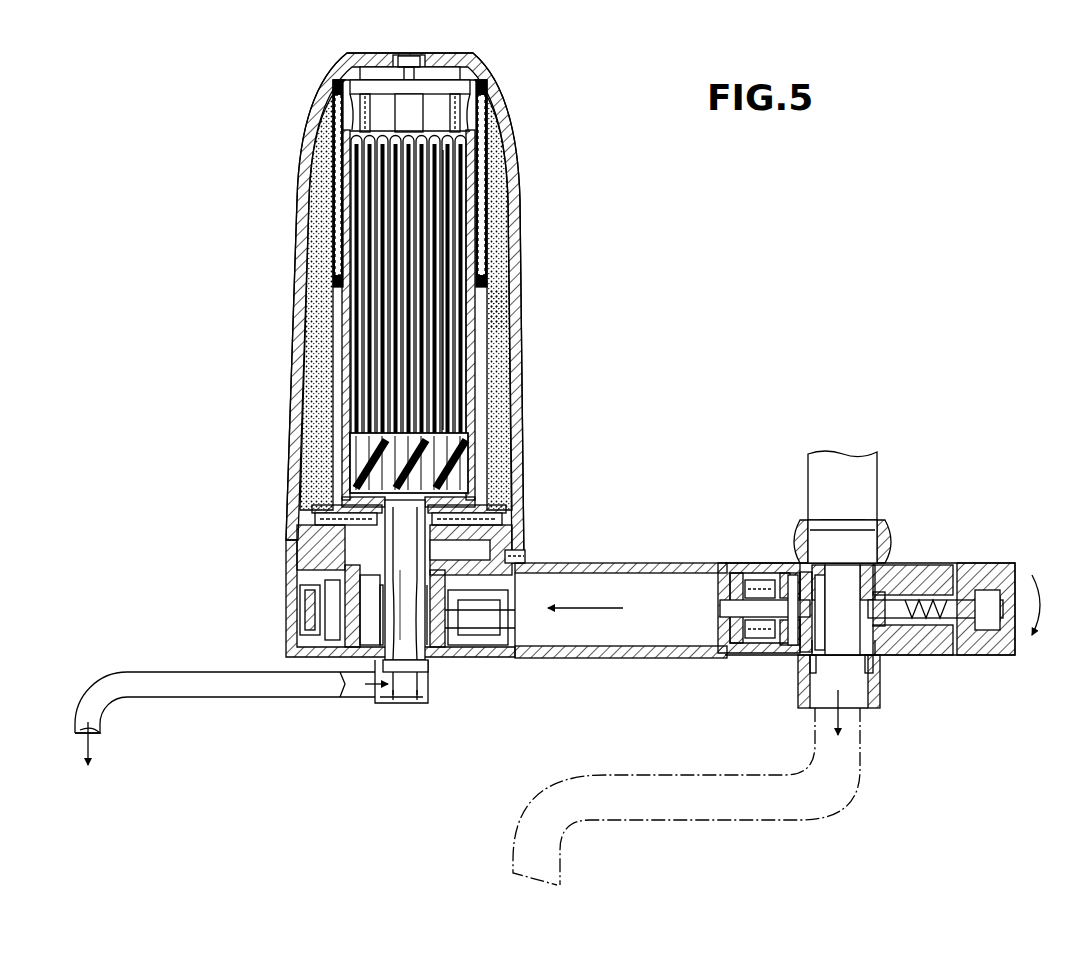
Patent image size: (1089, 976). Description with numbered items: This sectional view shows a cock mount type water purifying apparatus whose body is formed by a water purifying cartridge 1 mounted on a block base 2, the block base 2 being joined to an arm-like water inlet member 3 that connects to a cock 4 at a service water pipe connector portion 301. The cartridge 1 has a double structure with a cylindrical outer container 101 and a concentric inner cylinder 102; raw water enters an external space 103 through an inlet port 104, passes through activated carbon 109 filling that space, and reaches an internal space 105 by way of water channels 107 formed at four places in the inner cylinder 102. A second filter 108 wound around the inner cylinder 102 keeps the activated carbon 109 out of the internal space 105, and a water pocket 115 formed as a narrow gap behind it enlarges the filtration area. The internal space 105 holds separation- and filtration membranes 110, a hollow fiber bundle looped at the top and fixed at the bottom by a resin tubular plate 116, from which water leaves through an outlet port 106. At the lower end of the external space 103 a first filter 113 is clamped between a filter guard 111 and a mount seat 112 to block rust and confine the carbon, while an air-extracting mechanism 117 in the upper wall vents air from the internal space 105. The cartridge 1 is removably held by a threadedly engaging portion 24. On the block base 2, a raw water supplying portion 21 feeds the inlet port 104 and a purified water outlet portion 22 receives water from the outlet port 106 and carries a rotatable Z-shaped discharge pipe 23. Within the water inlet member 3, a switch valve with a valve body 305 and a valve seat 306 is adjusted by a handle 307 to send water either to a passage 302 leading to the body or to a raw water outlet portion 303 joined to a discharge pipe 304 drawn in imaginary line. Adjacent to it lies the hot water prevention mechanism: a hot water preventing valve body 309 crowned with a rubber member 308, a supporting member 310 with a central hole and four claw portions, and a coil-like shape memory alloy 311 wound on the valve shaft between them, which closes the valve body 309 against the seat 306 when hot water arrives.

The water purifying cartridge 1 is at (318, 78).
The block base 2 is at (277, 590).
The water inlet member 3 is at (668, 560).
The cock 4 is at (860, 480).
The raw water supplying portion 21 is at (488, 622).
The purified water outlet portion 22 is at (400, 705).
The Z-shaped discharge pipe 23 is at (218, 690).
The threadedly engaging portion 24 is at (515, 556).
The cylindrical outer container 101 is at (305, 212).
The inner cylinder 102 is at (322, 300).
The external space 103 is at (312, 247).
The inlet port 104 is at (483, 545).
The internal space 105 is at (380, 357).
The outlet port 106 is at (425, 668).
The water channels 107 is at (418, 108).
The second filter 108 is at (490, 208).
The activated carbon 109 is at (493, 310).
The separation- and filtration membranes 110 is at (437, 347).
The filter guard 111 is at (343, 503).
The mount seat 112 is at (303, 531).
The first filter 113 is at (327, 500).
The water pocket 115 is at (488, 165).
The tubular plate 116 is at (482, 470).
The air-extracting mechanism 117 is at (412, 58).
The service water pipe connector portion 301 is at (895, 530).
The passage 302 is at (583, 632).
The raw water outlet portion 303 is at (873, 708).
The discharge pipe 304 is at (845, 783).
The valve body 305 is at (878, 642).
The valve seat 306 is at (802, 580).
The handle 307 is at (993, 658).
The rubber member 308 is at (845, 672).
The hot water preventing valve body 309 is at (795, 640).
The supporting member 310 is at (736, 640).
The coil-like shape memory alloy 311 is at (772, 640).